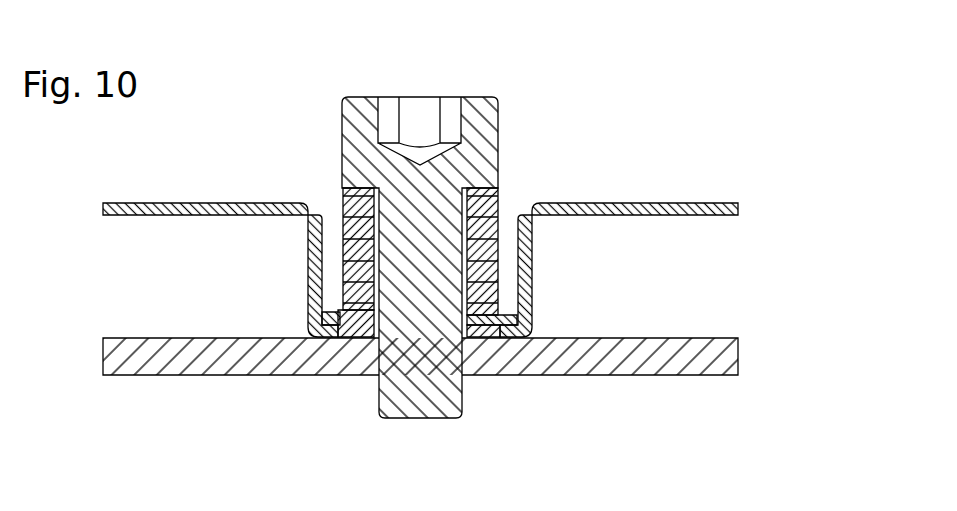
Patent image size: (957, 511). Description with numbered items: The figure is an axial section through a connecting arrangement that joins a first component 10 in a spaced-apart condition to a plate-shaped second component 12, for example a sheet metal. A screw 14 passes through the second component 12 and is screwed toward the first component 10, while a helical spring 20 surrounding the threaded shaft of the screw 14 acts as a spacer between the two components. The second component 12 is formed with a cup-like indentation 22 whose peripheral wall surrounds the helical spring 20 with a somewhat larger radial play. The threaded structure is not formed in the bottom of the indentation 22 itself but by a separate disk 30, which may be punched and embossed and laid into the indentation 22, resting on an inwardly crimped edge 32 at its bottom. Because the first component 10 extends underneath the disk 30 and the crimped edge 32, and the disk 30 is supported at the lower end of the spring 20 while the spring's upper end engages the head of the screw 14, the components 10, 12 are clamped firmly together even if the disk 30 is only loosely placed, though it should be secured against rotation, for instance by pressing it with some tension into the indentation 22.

The first component 10 is at (127, 362).
The second component 12 is at (660, 203).
The screw 14 is at (342, 147).
The helical spring 20 is at (497, 263).
The indentation 22 is at (308, 233).
The disk 30 is at (527, 313).
The crimped edge 32 is at (508, 335).